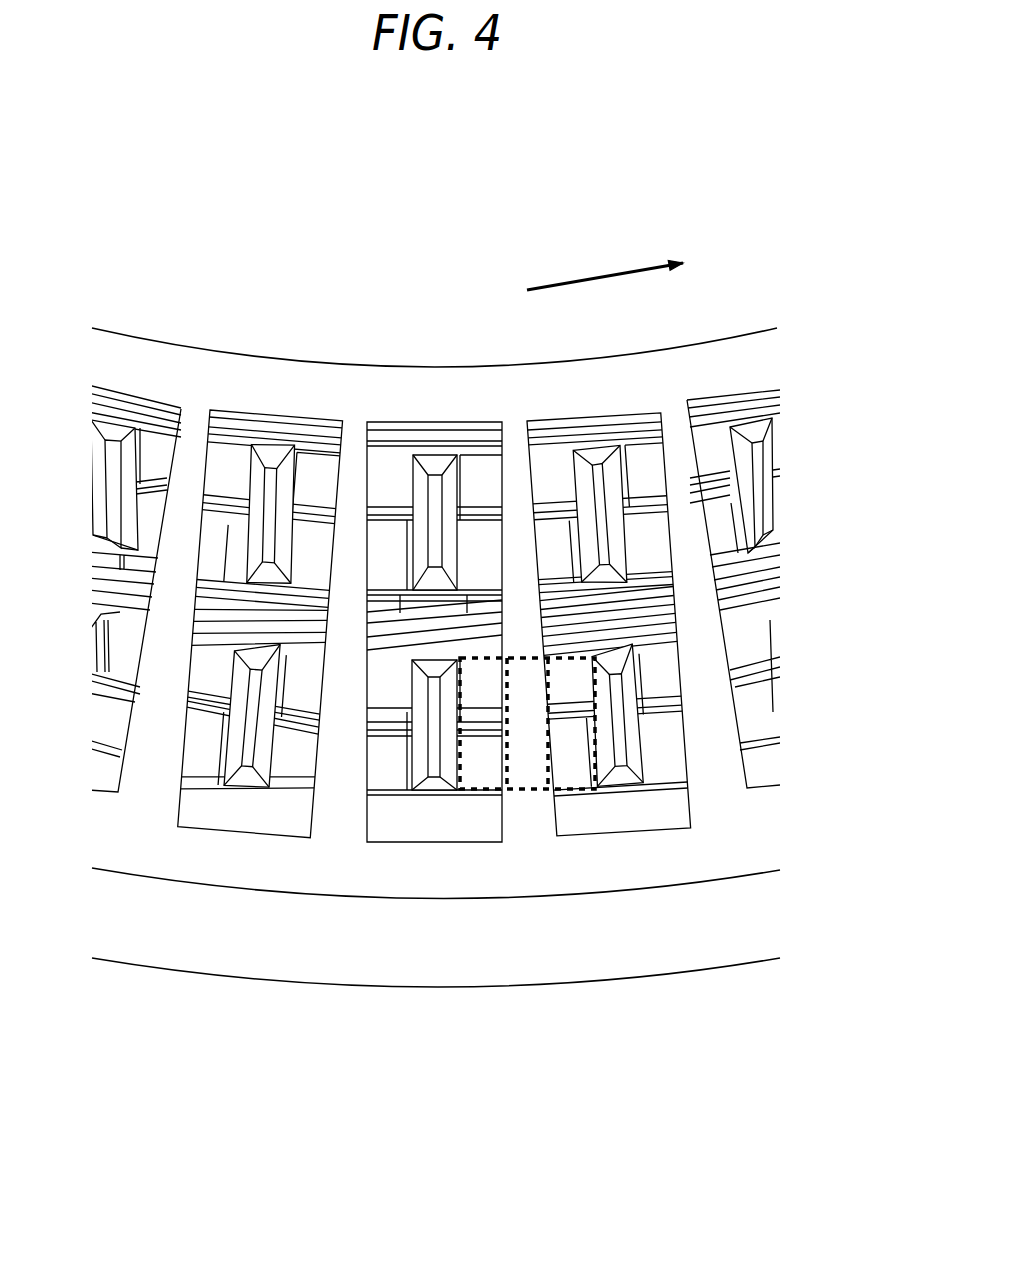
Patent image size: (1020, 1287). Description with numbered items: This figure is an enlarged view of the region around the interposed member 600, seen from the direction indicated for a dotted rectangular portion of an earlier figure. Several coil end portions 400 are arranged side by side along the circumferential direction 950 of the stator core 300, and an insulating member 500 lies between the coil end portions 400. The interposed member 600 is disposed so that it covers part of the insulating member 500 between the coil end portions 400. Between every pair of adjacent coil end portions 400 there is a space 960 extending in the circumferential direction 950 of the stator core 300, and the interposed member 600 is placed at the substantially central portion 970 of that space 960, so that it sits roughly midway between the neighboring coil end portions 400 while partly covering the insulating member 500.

The stator core 300 is at (553, 950).
The coil end portion 400 is at (434, 475).
The insulating member 500 is at (327, 502).
The interposed member 600 is at (651, 855).
The circumferential direction 950 is at (605, 253).
The space 960 is at (530, 793).
The substantially central portion 970 is at (500, 735).